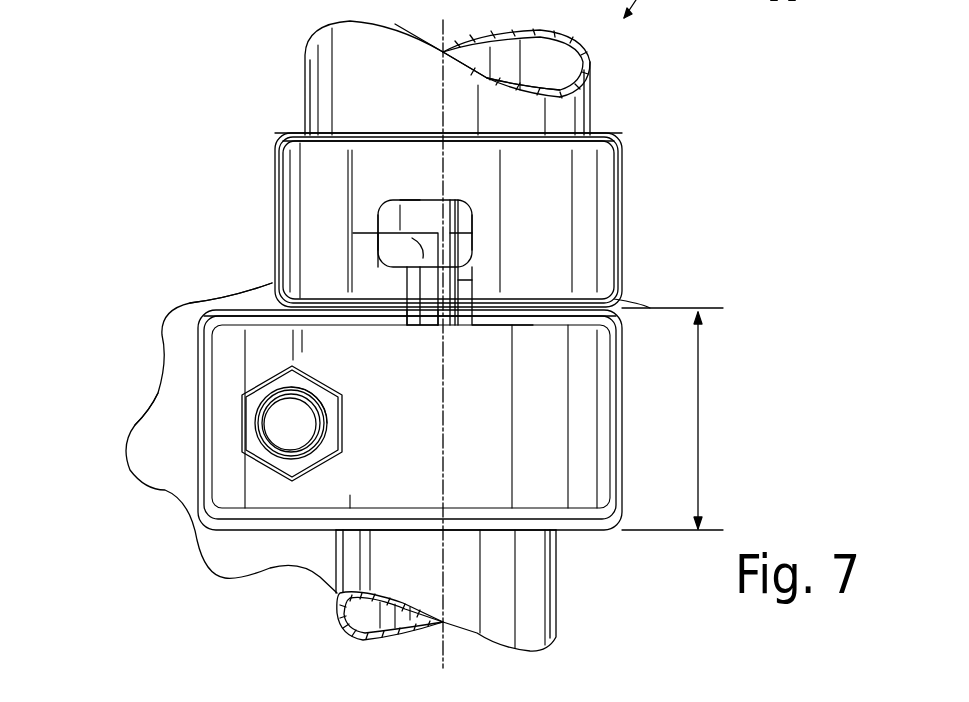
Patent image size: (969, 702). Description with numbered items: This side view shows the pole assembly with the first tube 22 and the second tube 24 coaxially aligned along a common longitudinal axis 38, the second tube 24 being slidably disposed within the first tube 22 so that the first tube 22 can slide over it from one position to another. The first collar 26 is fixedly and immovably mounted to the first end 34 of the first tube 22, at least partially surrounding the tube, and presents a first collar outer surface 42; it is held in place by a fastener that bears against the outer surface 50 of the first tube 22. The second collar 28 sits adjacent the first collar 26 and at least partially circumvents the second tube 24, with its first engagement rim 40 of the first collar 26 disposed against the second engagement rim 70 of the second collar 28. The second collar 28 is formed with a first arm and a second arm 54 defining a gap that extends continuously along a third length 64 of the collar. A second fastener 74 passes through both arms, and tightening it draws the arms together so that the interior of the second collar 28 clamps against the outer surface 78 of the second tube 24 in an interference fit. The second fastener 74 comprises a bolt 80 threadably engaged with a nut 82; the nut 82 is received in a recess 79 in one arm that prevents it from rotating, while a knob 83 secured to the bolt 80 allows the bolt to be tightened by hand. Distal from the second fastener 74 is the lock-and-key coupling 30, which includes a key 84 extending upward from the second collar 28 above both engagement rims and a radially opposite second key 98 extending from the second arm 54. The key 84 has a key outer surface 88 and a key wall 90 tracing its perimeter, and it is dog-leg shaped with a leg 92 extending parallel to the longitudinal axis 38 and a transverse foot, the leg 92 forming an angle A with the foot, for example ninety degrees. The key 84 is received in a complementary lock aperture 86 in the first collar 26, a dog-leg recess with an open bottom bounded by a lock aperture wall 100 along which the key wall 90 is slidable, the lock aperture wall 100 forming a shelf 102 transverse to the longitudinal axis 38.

The first tube 22 is at (590, 100).
The second tube 24 is at (556, 597).
The first collar 26 is at (610, 257).
The second collar 28 is at (622, 420).
The lock-and-key coupling 30 is at (508, 218).
The first end 34 is at (650, 303).
The common longitudinal axis 38 is at (444, 42).
The first engagement rim 40 is at (614, 306).
The first collar outer surface 42 is at (325, 178).
The outer surface 50 is at (476, 131).
The second arm 54 is at (223, 333).
The third length 64 is at (698, 418).
The second engagement rim 70 is at (385, 320).
The second fastener 74 is at (150, 374).
The outer surface 78 is at (406, 580).
The recess 79 is at (332, 388).
The bolt 80 is at (312, 432).
The nut 82 is at (282, 378).
The knob 83 is at (162, 458).
The key 84 is at (455, 245).
The lock aperture 86 is at (428, 200).
The key outer surface 88 is at (382, 225).
The key wall 90 is at (405, 200).
The leg 92 is at (470, 275).
The second key 98 is at (452, 230).
The lock aperture wall 100 is at (385, 268).
The shelf 102 is at (409, 325).
The angle A is at (424, 246).